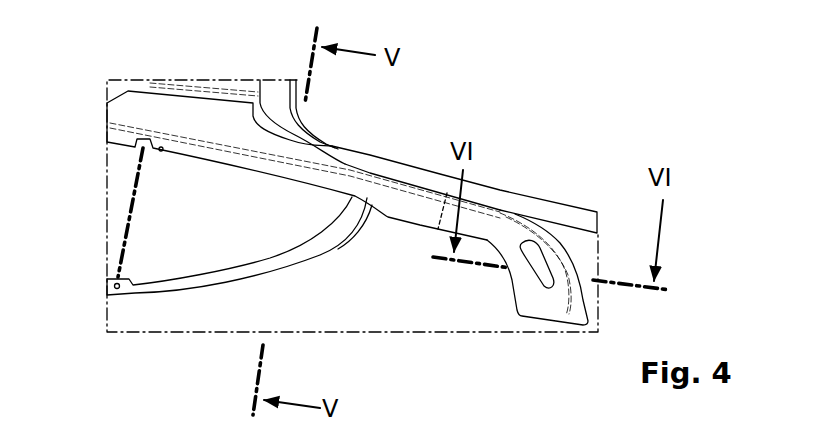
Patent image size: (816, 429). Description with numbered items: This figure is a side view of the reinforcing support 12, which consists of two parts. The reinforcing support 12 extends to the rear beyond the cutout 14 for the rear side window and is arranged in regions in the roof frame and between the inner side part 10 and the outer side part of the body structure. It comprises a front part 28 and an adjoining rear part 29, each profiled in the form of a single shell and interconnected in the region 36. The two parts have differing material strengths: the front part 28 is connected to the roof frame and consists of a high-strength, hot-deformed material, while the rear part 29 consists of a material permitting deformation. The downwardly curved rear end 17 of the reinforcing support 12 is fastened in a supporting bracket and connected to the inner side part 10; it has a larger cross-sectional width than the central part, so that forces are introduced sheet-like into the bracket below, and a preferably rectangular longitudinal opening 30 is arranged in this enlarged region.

The inner side part 10 is at (405, 321).
The reinforcing support 12 is at (126, 114).
The cutout 14 is at (203, 232).
The downwardly curved rear end 17 is at (559, 218).
The front part 28 is at (229, 100).
The rear part 29 is at (505, 203).
The longitudinal opening 30 is at (543, 282).
The region 36 is at (439, 198).